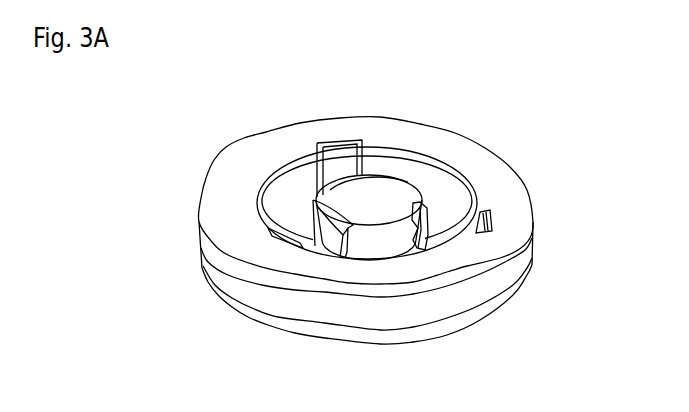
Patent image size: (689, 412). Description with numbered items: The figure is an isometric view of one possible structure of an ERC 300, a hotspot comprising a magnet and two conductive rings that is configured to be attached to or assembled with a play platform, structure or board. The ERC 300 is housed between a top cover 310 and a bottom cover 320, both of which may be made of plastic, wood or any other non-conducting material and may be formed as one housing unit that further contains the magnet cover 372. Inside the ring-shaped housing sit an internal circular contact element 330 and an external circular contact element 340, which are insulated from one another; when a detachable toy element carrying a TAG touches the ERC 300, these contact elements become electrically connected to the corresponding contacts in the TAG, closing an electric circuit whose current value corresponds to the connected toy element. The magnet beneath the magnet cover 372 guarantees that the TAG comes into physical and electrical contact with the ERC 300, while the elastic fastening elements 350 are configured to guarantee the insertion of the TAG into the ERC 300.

The ERC 300 is at (112, 118).
The top cover 310 is at (517, 176).
The bottom cover 320 is at (505, 282).
The internal circular contact element 330 is at (428, 210).
The external circular contact element 340 is at (487, 223).
The elastic fastening element 350 is at (332, 142).
The magnet cover 372 is at (383, 178).